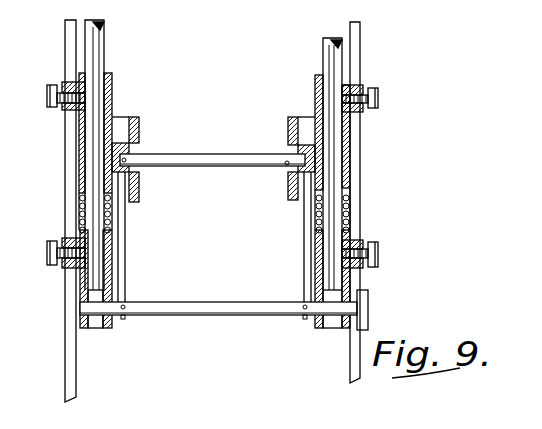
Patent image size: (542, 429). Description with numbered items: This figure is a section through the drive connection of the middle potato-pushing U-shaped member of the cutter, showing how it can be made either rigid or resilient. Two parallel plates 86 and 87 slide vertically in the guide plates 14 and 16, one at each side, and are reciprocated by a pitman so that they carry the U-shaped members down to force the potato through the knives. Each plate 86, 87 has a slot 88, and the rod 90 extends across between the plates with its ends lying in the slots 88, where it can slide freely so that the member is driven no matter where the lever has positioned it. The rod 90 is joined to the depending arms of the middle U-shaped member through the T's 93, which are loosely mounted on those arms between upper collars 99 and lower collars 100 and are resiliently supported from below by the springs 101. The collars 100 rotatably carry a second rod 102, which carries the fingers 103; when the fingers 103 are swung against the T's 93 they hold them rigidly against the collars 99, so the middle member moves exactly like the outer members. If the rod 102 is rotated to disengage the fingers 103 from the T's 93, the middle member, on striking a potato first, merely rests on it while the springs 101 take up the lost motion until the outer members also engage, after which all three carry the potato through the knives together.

The guide plate 14 is at (66, 362).
The guide plate 16 is at (350, 361).
The plate 86 is at (139, 128).
The plate 87 is at (288, 126).
The slot 88 is at (143, 156).
The rod 90 is at (228, 166).
The T 93 is at (84, 162).
The collar 99 is at (112, 93).
The collar 100 is at (110, 260).
The spring 101 is at (79, 211).
The rod 102 is at (221, 302).
The finger 103 is at (126, 232).